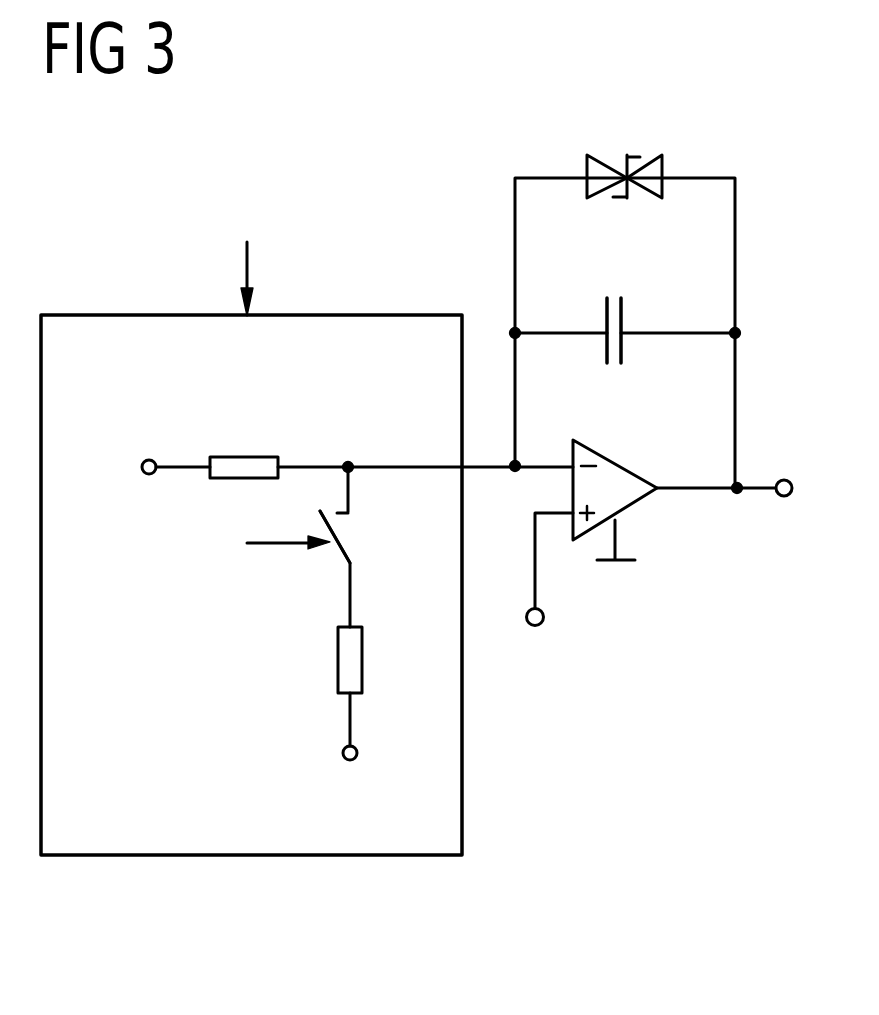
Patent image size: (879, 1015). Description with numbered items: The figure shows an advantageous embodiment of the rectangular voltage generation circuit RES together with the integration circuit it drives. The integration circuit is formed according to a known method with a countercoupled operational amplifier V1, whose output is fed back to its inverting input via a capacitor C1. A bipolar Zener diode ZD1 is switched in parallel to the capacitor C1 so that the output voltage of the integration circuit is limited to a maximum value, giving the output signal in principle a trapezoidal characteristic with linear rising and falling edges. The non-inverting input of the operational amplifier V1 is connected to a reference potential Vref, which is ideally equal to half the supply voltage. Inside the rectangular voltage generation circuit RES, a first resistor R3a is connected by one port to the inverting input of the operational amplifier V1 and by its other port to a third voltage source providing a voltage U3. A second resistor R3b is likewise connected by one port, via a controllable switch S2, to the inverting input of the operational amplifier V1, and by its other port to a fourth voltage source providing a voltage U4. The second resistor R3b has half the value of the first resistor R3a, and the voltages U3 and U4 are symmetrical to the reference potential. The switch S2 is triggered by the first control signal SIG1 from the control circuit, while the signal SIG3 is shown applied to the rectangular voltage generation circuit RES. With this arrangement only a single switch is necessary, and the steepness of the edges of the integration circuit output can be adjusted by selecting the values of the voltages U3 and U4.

The rectangular voltage generation circuit RES is at (238, 856).
The control signal SIG3 is at (251, 253).
The voltage of the third voltage source U3 is at (123, 471).
The first resistor R3a is at (245, 457).
The controllable switch S2 is at (350, 531).
The first control signal SIG1 is at (246, 544).
The second resistor R3b is at (338, 661).
The voltage of the fourth voltage source U4 is at (352, 783).
The bipolar Zener diode ZD1 is at (608, 160).
The capacitor C1 is at (625, 313).
The operational amplifier V1 is at (613, 462).
The reference potential Vref is at (537, 645).